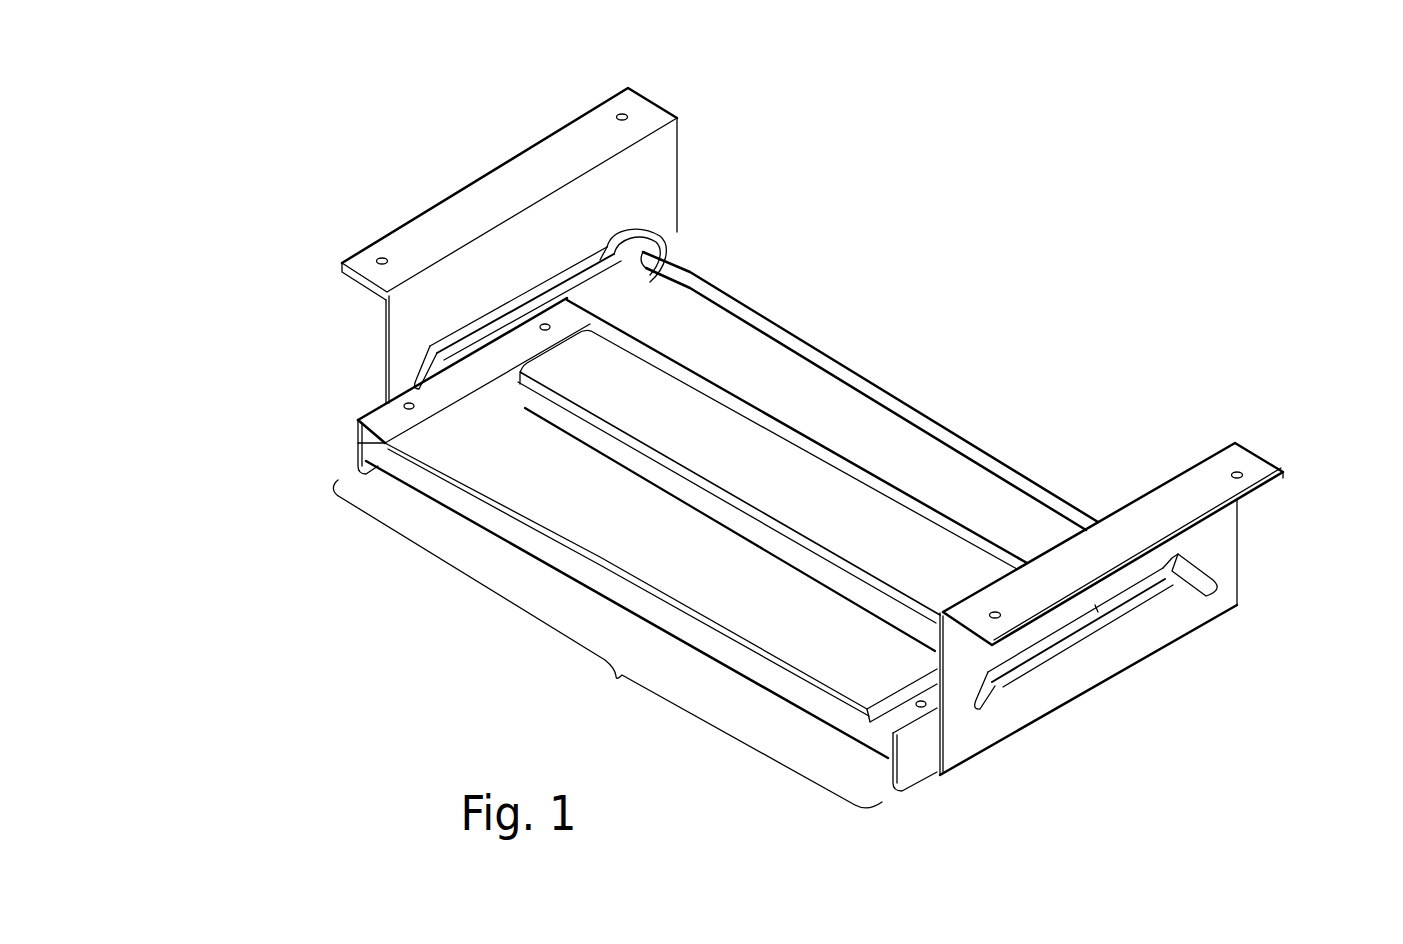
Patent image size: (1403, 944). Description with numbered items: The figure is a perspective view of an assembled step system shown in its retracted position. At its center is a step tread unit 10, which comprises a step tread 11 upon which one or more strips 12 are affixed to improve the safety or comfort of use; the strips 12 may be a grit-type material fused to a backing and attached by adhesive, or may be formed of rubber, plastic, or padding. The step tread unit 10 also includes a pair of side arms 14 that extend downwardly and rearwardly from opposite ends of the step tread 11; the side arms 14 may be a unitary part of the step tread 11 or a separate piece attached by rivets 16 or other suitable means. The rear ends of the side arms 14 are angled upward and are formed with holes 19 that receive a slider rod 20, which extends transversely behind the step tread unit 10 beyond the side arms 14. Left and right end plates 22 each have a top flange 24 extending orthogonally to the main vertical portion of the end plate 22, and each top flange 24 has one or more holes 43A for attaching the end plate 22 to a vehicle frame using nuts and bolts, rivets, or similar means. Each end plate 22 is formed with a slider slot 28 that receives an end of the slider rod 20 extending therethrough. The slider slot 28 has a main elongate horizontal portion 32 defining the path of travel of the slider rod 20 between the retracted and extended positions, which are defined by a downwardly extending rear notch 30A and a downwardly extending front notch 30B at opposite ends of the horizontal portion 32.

The step tread unit 10 is at (607, 644).
The step tread 11 is at (570, 559).
The strips 12 is at (725, 443).
The side arms 14 is at (357, 421).
The rivets 16 is at (404, 404).
The holes 19 is at (672, 232).
The slider rod 20 is at (878, 388).
The end plates 22 is at (664, 152).
The top flange 24 is at (547, 157).
The slider slot 28 is at (863, 490).
The rear notch 30A is at (641, 232).
The front notch 30B is at (412, 365).
The main elongate horizontal portion 32 is at (532, 289).
The holes 43A is at (620, 112).